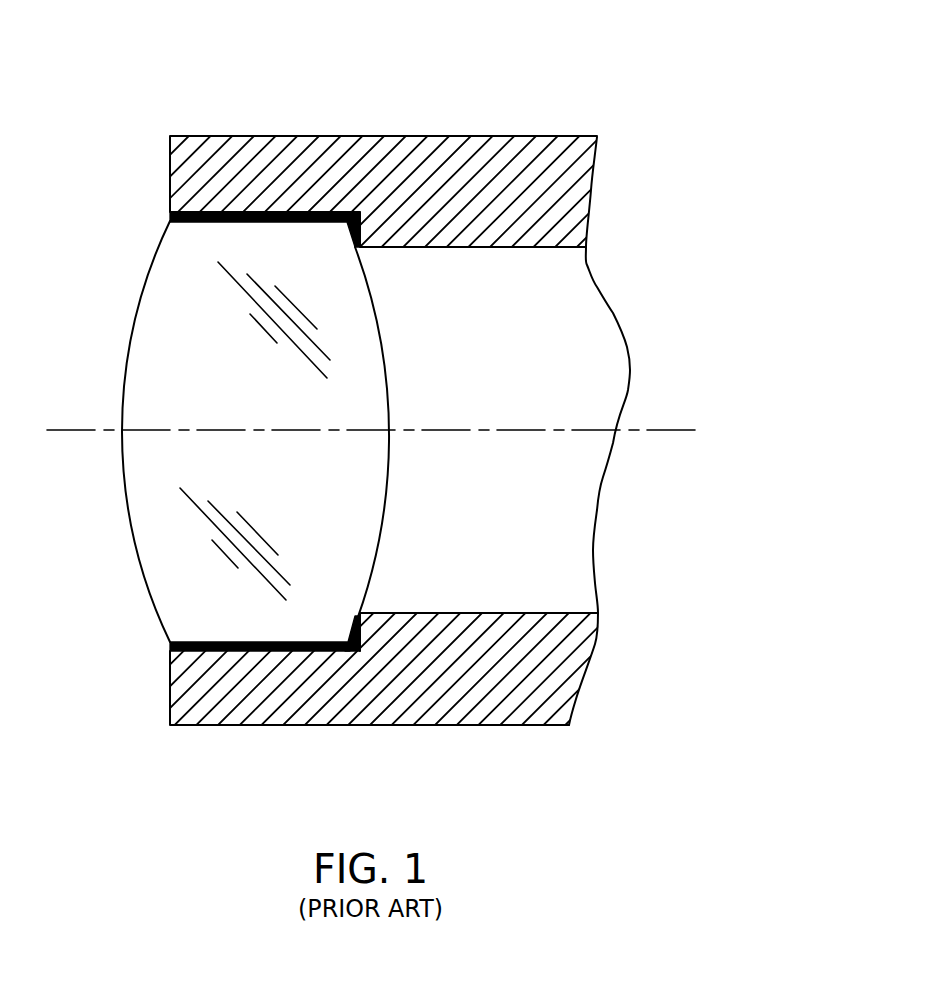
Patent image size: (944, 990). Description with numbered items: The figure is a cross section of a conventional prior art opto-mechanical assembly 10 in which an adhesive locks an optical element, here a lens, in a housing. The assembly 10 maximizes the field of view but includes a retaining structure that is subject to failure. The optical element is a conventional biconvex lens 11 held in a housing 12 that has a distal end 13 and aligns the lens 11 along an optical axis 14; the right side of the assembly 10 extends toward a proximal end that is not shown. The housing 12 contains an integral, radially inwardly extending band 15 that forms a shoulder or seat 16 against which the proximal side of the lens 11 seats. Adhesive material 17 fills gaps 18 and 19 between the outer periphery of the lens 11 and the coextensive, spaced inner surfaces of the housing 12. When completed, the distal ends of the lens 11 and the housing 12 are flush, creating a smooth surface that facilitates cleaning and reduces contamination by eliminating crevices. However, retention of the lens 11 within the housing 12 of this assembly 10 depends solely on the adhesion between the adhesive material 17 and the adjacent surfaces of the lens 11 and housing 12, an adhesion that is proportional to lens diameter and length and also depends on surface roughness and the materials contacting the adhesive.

The opto-mechanical assembly 10 is at (592, 109).
The biconvex lens 11 is at (157, 297).
The housing 12 is at (268, 135).
The distal end 13 is at (145, 216).
The optical axis 14 is at (659, 427).
The band 15 is at (487, 227).
The shoulder or seat 16 is at (350, 626).
The adhesive material 17 is at (352, 212).
The gap 18 is at (265, 650).
The gap 19 is at (345, 652).